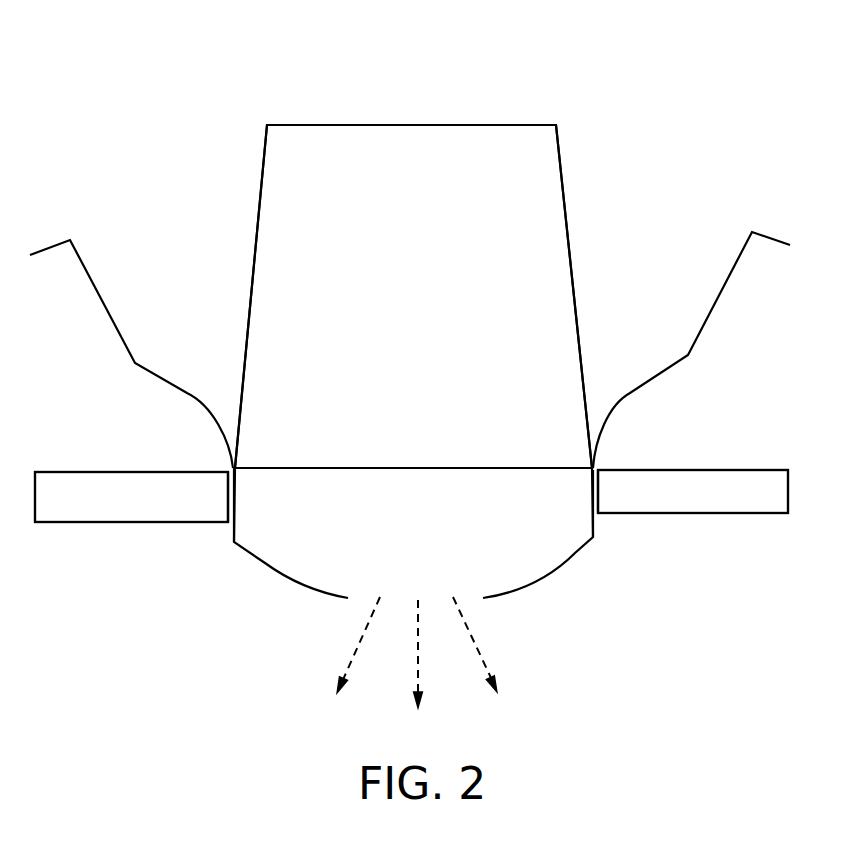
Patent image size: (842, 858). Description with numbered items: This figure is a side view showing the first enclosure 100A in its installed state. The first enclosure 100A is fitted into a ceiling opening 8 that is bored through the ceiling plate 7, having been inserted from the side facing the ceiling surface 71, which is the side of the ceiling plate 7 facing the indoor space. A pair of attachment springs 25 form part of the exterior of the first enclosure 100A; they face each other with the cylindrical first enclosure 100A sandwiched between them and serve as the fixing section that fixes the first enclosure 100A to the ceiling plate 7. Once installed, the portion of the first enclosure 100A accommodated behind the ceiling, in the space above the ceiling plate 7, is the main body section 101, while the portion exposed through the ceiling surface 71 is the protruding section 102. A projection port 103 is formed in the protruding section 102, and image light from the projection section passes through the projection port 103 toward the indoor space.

The first enclosure 100A is at (426, 110).
The main body section 101 is at (567, 218).
The protruding section 102 is at (278, 557).
The projection port 103 is at (488, 603).
The attachment springs 25 is at (118, 330).
The ceiling plate 7 is at (718, 466).
The ceiling surface 71 is at (91, 532).
The ceiling opening 8 is at (220, 534).